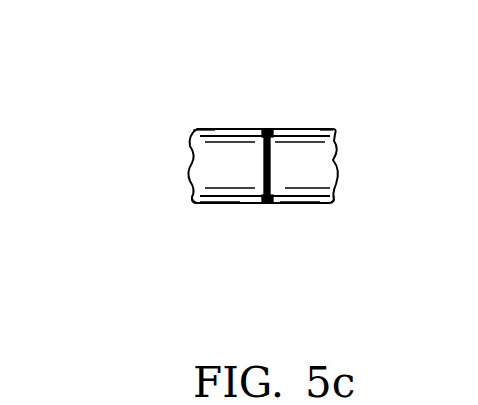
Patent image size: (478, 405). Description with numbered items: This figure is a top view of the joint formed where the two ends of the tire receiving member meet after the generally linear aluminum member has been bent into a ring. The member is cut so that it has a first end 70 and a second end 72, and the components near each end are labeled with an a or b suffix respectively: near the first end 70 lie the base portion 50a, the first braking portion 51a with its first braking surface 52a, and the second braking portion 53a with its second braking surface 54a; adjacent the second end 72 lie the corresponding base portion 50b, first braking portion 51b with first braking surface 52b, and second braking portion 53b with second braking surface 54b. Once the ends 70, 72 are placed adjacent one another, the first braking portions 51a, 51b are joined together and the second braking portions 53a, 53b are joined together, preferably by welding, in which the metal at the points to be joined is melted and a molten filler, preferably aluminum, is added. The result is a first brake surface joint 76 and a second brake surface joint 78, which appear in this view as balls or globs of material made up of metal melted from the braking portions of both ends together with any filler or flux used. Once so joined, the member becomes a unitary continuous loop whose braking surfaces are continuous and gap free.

The first end 70 is at (300, 122).
The second end 72 is at (241, 117).
The first brake surface joint 76 is at (265, 203).
The second brake surface joint 78 is at (267, 128).
The base portion 50a is at (331, 158).
The base portion 50b is at (178, 168).
The first braking portion 51a is at (350, 204).
The first braking portion 51b is at (181, 208).
The first braking surface 52a is at (292, 203).
The first braking surface 52b is at (237, 204).
The second braking portion 53a is at (333, 129).
The second braking portion 53b is at (180, 127).
The second braking surface 54a is at (313, 127).
The second braking surface 54b is at (222, 127).